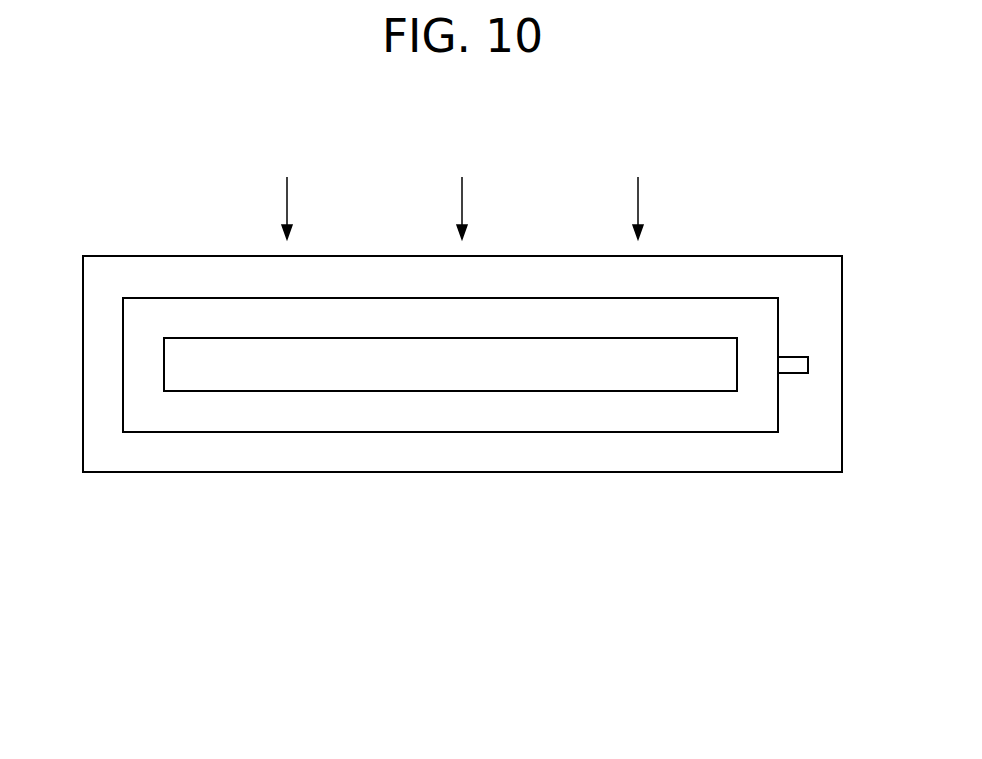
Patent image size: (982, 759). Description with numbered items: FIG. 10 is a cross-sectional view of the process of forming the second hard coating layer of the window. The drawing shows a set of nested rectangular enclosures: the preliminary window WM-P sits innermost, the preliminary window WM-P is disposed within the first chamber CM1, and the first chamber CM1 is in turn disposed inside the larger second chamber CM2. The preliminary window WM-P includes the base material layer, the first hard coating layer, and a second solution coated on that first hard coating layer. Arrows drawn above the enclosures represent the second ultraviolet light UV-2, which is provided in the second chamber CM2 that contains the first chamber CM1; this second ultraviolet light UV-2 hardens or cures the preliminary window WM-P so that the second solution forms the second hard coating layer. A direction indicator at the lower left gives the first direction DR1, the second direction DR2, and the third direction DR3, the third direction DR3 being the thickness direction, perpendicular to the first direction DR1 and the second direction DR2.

The second ultraviolet light UV-2 is at (638, 199).
The preliminary window WM-P is at (500, 378).
The first chamber CM1 is at (617, 417).
The second chamber CM2 is at (734, 460).
The first direction DR1 is at (90, 638).
The second direction DR2 is at (88, 632).
The third direction DR3 is at (82, 630).